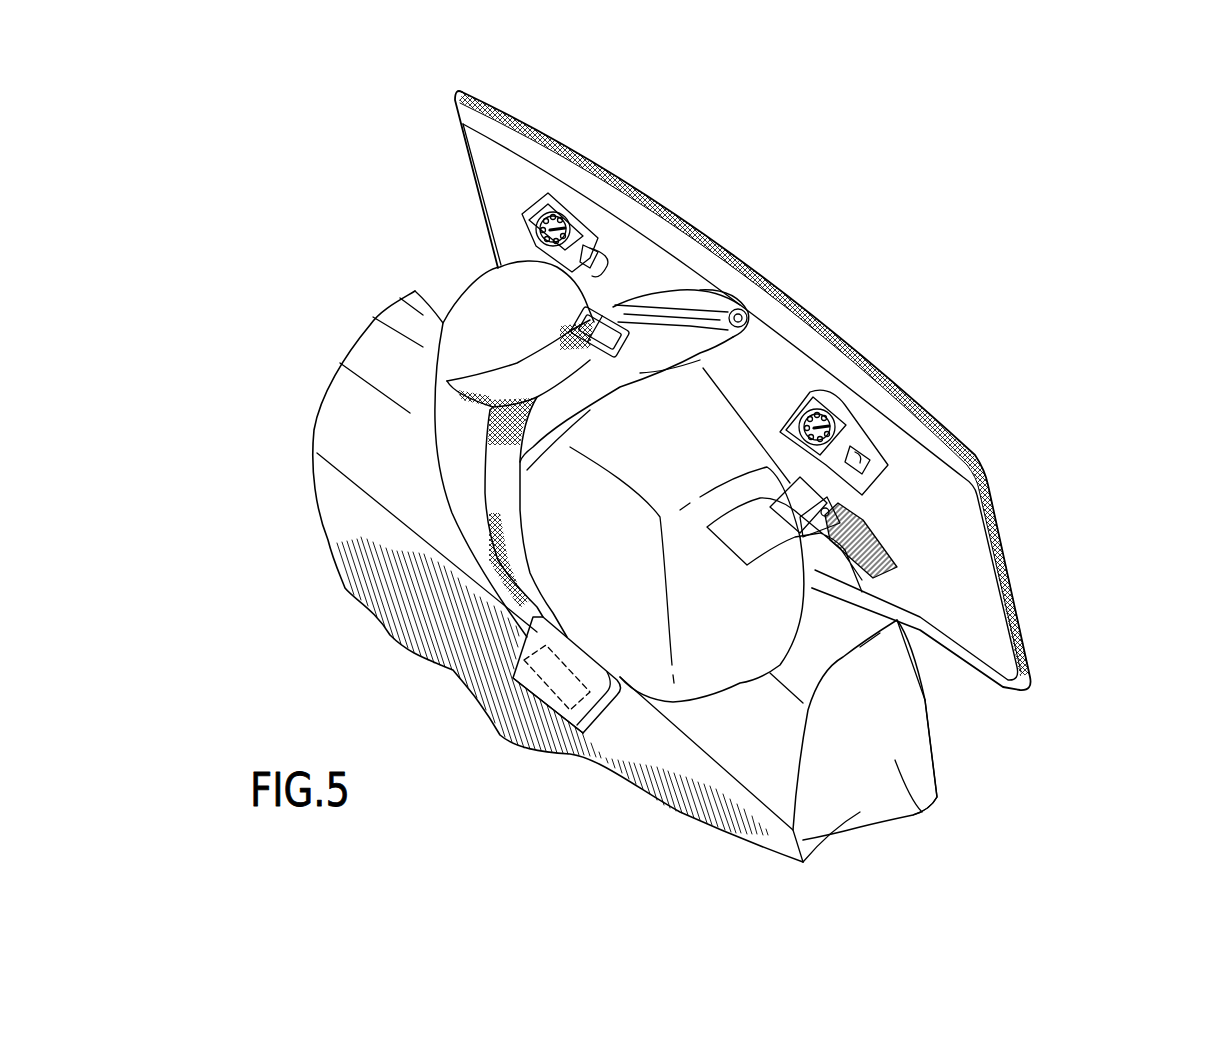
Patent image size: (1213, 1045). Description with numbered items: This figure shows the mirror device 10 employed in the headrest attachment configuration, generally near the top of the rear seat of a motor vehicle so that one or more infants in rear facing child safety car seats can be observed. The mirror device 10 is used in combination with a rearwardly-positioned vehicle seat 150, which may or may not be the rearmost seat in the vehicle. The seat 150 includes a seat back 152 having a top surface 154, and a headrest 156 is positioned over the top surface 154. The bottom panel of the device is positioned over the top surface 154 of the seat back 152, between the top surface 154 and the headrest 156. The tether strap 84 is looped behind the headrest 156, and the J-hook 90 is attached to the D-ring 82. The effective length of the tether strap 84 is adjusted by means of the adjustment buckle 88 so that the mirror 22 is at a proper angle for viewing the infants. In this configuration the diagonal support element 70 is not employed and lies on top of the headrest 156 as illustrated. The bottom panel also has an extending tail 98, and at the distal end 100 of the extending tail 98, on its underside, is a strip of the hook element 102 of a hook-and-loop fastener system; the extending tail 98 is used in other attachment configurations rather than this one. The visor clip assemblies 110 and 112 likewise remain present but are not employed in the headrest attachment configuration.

The mirror device 10 is at (968, 310).
The mirror 22 is at (973, 374).
The diagonal support element 70 is at (620, 378).
The D-ring 82 is at (727, 320).
The tether strap 84 is at (497, 483).
The adjustment buckle 88 is at (597, 320).
The J-hook 90 is at (660, 333).
The extending tail 98 is at (540, 643).
The distal end 100 is at (532, 685).
The hook element 102 is at (570, 710).
The visor clip assembly 110 is at (492, 190).
The visor clip assembly 112 is at (903, 522).
The vehicle seat 150 is at (900, 787).
The seat back 152 is at (930, 732).
The top surface 154 is at (850, 640).
The headrest 156 is at (480, 330).